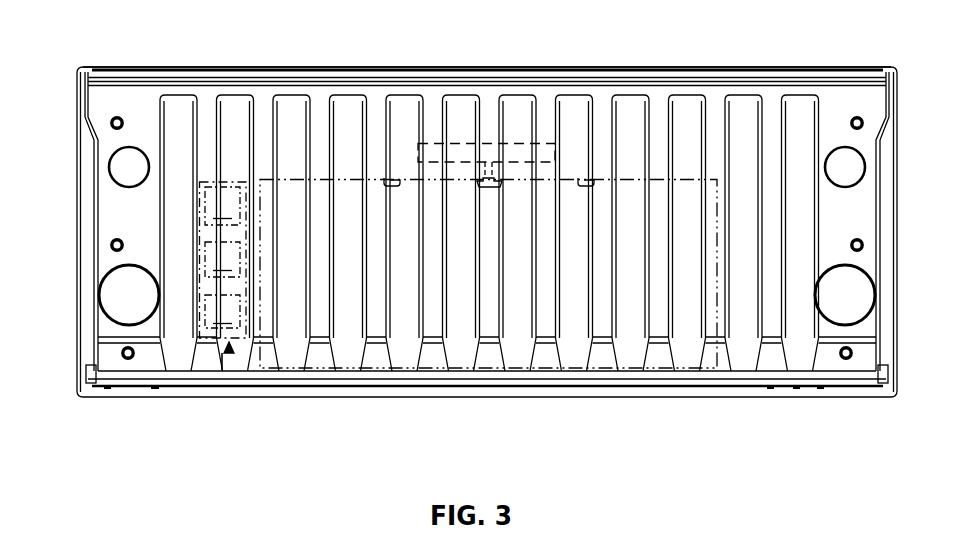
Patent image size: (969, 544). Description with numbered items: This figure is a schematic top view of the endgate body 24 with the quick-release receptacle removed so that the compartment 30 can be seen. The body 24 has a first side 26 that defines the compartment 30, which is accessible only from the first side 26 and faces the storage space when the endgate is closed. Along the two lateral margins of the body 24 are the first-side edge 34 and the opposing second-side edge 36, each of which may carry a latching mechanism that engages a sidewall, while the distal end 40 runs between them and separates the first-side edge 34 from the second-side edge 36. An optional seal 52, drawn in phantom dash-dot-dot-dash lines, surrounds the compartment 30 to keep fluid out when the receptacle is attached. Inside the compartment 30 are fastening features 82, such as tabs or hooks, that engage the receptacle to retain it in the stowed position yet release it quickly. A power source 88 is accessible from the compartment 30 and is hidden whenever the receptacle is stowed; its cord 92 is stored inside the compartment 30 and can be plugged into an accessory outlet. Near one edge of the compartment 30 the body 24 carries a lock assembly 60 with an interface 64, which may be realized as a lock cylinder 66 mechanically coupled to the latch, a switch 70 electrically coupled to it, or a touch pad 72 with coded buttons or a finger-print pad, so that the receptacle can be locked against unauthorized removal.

The body 24 is at (847, 400).
The first side 26 is at (203, 82).
The compartment 30 is at (708, 242).
The first-side edge 34 is at (77, 213).
The second-side edge 36 is at (889, 162).
The distal end 40 is at (847, 67).
The seal 52 is at (333, 372).
The lock assembly 60 is at (221, 360).
The interface 64 is at (255, 260).
The lock cylinder 66 is at (222, 206).
The switch 70 is at (222, 259).
The touch pad 72 is at (222, 311).
The fastening feature 82 is at (391, 188).
The power source 88 is at (517, 140).
The cord 92 is at (489, 187).